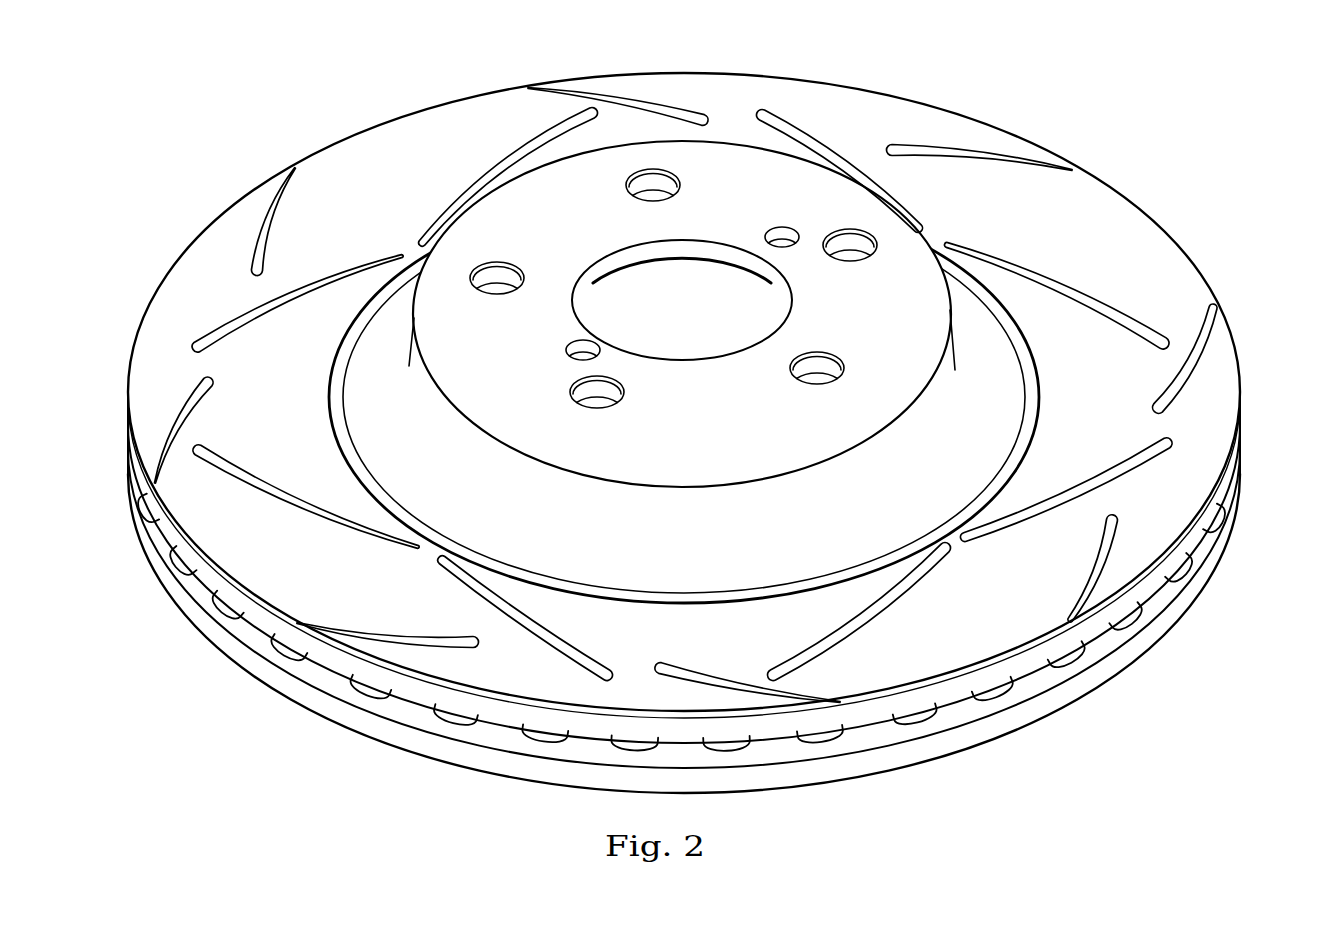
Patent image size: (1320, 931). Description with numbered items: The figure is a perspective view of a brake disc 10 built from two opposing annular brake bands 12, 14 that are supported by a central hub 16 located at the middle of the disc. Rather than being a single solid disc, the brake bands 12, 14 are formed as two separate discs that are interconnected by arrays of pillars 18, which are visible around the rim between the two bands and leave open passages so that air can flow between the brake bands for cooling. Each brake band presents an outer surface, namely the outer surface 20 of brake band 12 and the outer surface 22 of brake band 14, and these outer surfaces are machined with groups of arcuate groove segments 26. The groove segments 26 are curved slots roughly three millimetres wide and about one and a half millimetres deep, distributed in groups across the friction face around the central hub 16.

The brake disc 10 is at (1190, 143).
The brake band 12 is at (1150, 270).
The brake band 14 is at (368, 737).
The central hub 16 is at (780, 182).
The pillars 18 is at (228, 608).
The outer surface 20 is at (695, 397).
The outer surface 22 is at (234, 694).
The arcuate groove segments 26 is at (243, 303).